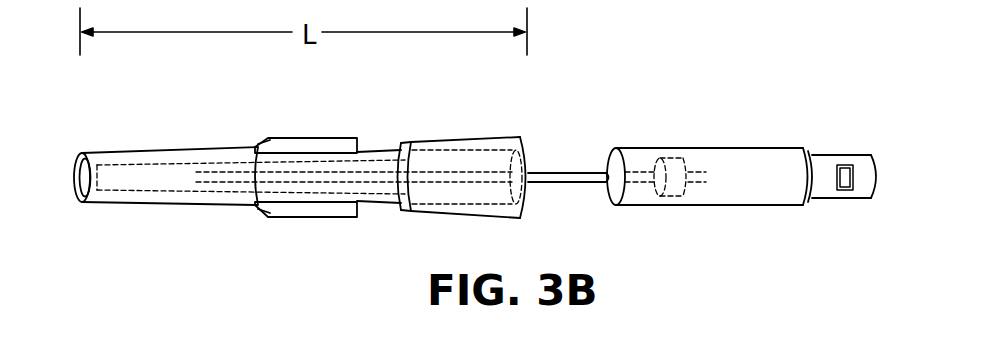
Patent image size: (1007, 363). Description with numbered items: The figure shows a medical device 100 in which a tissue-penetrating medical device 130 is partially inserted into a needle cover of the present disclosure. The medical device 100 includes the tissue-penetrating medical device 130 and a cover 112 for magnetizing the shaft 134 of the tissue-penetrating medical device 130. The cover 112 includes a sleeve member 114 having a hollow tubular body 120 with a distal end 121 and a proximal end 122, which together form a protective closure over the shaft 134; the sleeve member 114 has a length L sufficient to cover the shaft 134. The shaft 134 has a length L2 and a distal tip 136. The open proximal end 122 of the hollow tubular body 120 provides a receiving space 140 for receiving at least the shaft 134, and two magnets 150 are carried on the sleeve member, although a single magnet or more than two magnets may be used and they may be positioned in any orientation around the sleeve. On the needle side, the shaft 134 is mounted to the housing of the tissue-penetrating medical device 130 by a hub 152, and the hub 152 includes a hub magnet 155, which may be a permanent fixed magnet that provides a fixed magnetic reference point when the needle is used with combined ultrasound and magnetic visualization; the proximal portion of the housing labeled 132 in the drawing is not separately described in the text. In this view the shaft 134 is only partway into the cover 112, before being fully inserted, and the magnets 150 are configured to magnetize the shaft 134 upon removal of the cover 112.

The medical device 100 is at (693, 118).
The cover 112 is at (315, 235).
The sleeve member 114 is at (80, 207).
The hollow tubular body 120 is at (112, 196).
The distal end 121 is at (76, 172).
The proximal end 122 is at (522, 141).
The tissue-penetrating medical device 130 is at (750, 225).
The proximal end cap 132 is at (843, 192).
The shaft 134 is at (570, 183).
The distal tip 136 is at (198, 181).
The receiving space 140 is at (149, 172).
The magnets 150 is at (290, 137).
The hub 152 is at (673, 192).
The hub magnet 155 is at (853, 177).